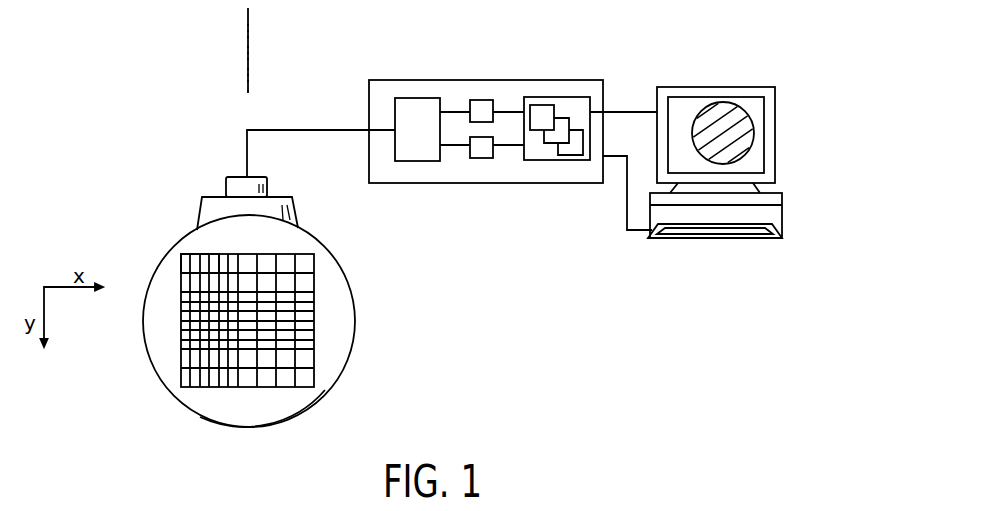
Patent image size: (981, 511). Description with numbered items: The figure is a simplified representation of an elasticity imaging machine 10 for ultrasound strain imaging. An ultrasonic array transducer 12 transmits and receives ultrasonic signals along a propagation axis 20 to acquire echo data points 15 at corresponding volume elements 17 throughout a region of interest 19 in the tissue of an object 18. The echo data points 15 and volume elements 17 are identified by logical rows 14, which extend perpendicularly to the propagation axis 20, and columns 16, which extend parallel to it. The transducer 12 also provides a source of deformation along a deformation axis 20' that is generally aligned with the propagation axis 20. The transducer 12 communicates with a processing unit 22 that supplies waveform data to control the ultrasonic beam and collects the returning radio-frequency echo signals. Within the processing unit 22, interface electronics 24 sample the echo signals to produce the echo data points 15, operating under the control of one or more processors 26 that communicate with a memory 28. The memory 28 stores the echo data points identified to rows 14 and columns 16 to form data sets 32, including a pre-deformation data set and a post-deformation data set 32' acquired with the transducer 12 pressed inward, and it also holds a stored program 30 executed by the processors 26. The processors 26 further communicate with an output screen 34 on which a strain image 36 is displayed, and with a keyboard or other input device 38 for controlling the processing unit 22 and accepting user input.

The elasticity imaging machine 10 is at (680, 30).
The ultrasonic array transducer 12 is at (198, 214).
The rows 14 is at (326, 302).
The echo data points 15 is at (187, 283).
The columns 16 is at (190, 398).
The volume elements 17 is at (208, 260).
The object 18 is at (300, 243).
The region of interest 19 is at (325, 390).
The propagation axis 20 is at (286, 50).
The deformation axis 20' is at (305, 51).
The processing unit 22 is at (455, 47).
The interface electronics 24 is at (430, 140).
The processors 26 is at (482, 98).
The memory 28 is at (557, 97).
The stored program 30 is at (535, 131).
The data sets 32 is at (552, 168).
The post-deformation data set 32' is at (585, 174).
The output screen 34 is at (777, 132).
The strain image 36 is at (740, 122).
The input device 38 is at (783, 210).